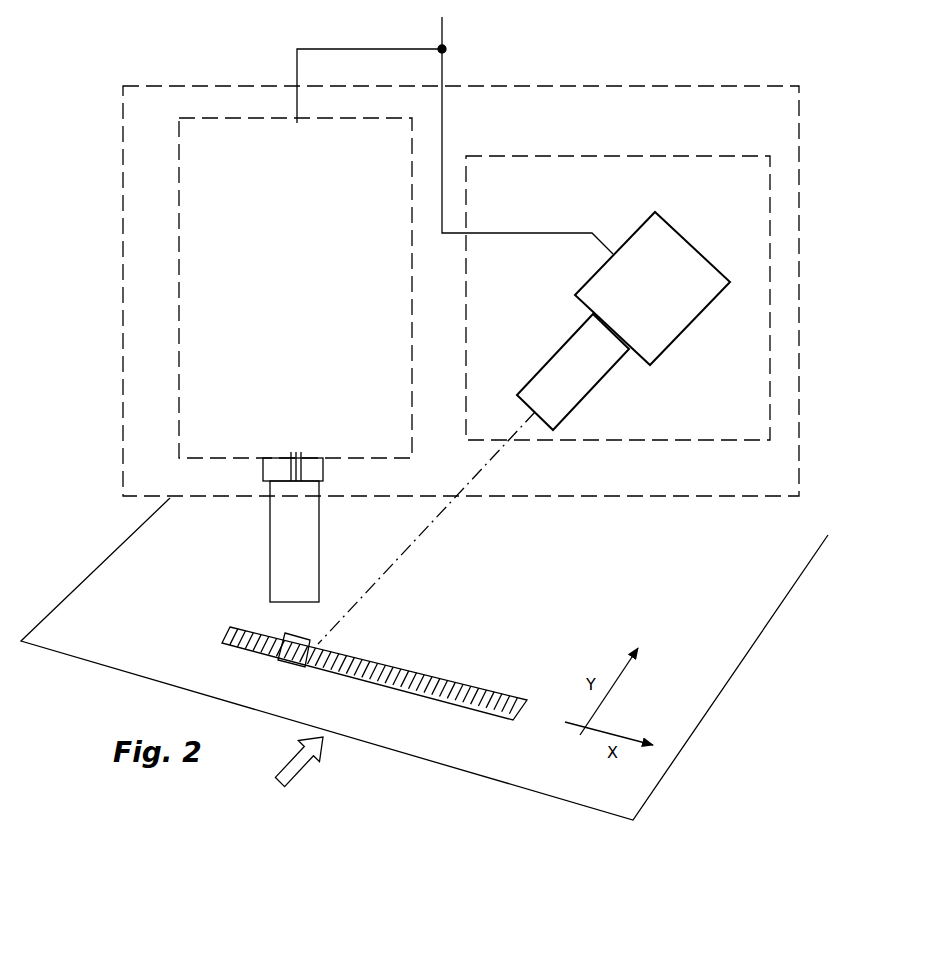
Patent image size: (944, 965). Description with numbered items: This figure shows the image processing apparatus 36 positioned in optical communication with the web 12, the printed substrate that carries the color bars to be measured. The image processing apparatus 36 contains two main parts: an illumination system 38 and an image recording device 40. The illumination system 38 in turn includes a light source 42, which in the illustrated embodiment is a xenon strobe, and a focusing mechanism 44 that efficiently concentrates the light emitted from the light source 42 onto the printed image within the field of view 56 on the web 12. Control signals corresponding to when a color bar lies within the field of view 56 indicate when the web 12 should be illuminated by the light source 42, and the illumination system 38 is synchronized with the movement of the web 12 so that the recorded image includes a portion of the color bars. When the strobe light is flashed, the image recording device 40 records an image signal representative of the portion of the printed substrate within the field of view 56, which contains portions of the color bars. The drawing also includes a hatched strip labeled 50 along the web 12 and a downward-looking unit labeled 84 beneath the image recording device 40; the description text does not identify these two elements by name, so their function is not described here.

The web 12 is at (658, 787).
The image processing apparatus 36 is at (567, 87).
The illumination system 38 is at (770, 197).
The image recording device 40 is at (226, 117).
The light source 42 is at (652, 363).
The focusing mechanism 44 is at (557, 360).
The scan line 50 is at (290, 622).
The field of view 56 is at (310, 642).
The camera 84 is at (322, 542).